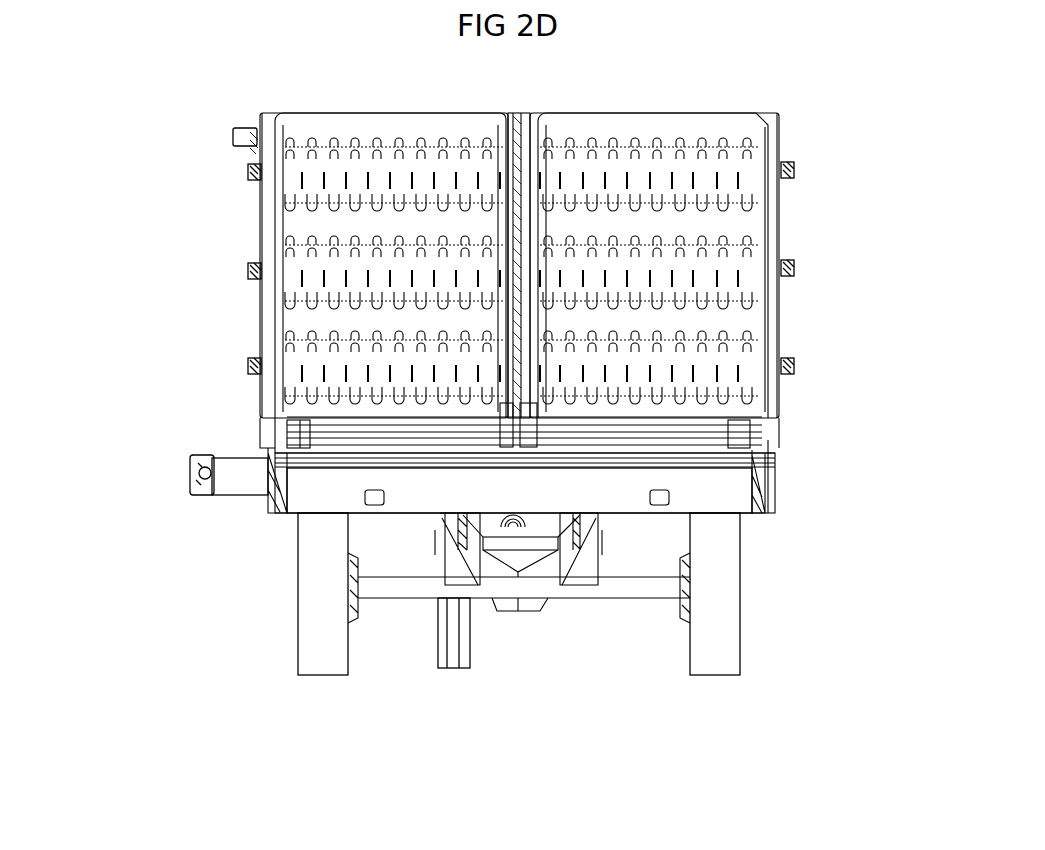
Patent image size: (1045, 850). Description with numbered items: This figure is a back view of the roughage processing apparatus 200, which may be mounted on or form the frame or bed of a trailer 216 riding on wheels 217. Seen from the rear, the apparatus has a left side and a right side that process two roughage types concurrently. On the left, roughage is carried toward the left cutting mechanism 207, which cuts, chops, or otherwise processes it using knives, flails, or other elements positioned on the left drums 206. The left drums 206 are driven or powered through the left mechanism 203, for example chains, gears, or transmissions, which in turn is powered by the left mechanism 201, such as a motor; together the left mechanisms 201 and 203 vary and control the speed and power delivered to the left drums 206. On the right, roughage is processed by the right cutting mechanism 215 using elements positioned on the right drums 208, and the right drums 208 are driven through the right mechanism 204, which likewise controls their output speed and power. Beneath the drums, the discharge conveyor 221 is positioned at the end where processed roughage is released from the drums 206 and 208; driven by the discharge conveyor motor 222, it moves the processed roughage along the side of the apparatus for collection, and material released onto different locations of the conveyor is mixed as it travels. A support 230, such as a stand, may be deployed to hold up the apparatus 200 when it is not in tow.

The roughage processing apparatus 200 is at (519, 368).
The left driving mechanism 201 is at (235, 130).
The left driving mechanism 203 is at (250, 366).
The right driving mechanism 204 is at (792, 364).
The left drums 206 is at (307, 358).
The left cutting mechanism 207 is at (367, 370).
The right drums 208 is at (735, 378).
The right cutting mechanism 215 is at (700, 358).
The trailer 216 is at (762, 511).
The wheels 217 is at (298, 645).
The discharge conveyor 221 is at (188, 465).
The discharge conveyor motor 222 is at (205, 480).
The support 230 is at (465, 628).